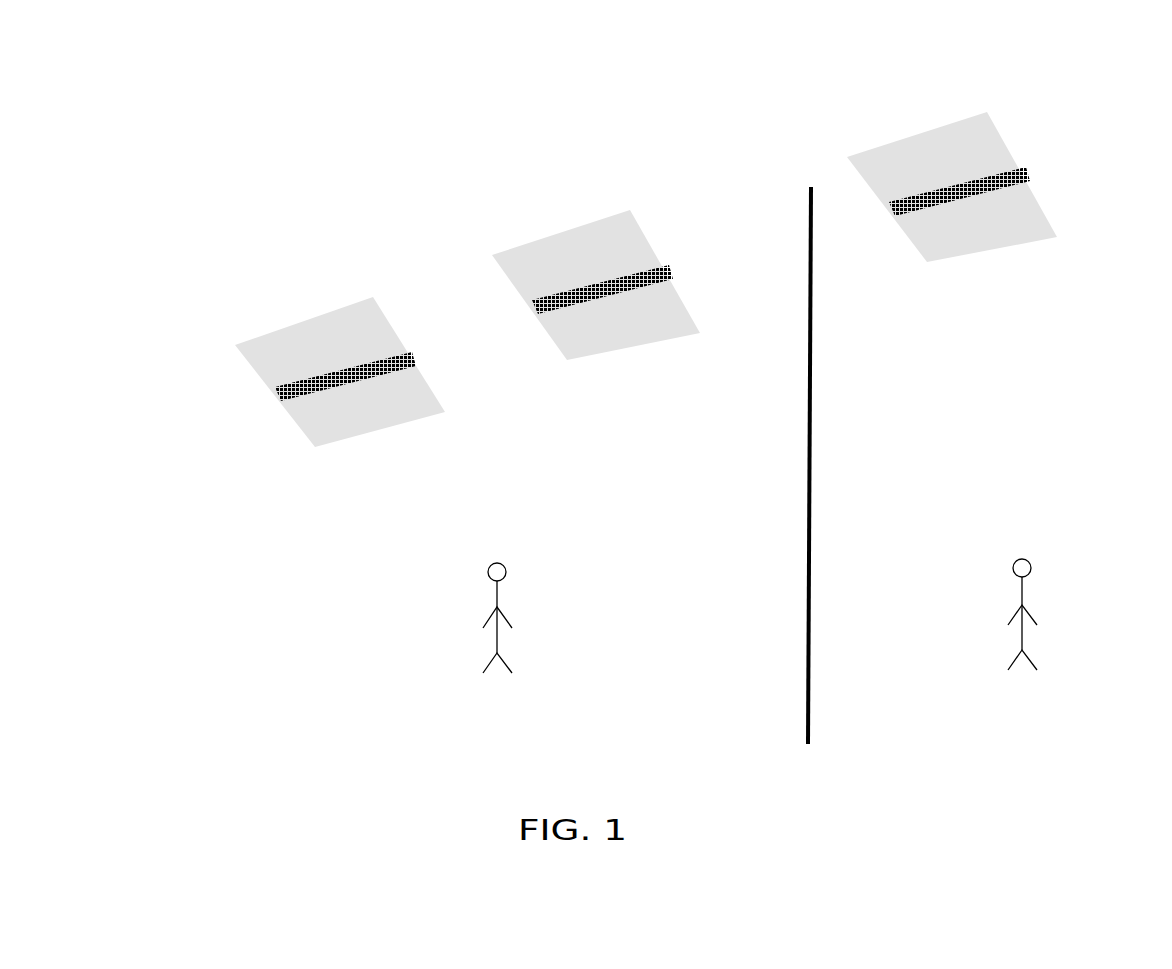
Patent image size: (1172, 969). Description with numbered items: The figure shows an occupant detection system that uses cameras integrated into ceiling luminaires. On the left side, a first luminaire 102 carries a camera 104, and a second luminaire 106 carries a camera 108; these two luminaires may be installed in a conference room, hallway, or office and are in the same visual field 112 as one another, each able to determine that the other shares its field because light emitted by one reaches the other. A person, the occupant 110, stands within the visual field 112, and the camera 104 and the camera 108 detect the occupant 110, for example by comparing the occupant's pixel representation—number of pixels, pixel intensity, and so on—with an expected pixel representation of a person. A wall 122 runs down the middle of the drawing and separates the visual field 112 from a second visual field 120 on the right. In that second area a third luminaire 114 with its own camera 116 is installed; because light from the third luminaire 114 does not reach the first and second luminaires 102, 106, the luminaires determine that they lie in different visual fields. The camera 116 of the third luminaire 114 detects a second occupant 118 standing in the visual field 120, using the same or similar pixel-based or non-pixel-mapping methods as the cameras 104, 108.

The first luminaire 102 is at (267, 279).
The camera 104 is at (354, 387).
The second luminaire 106 is at (532, 190).
The camera 108 is at (609, 302).
The occupant 110 is at (509, 595).
The visual field 112 is at (721, 713).
The third luminaire 114 is at (919, 100).
The camera 116 is at (997, 212).
The occupant 118 is at (1034, 591).
The visual field 120 is at (1095, 723).
The wall 122 is at (810, 700).